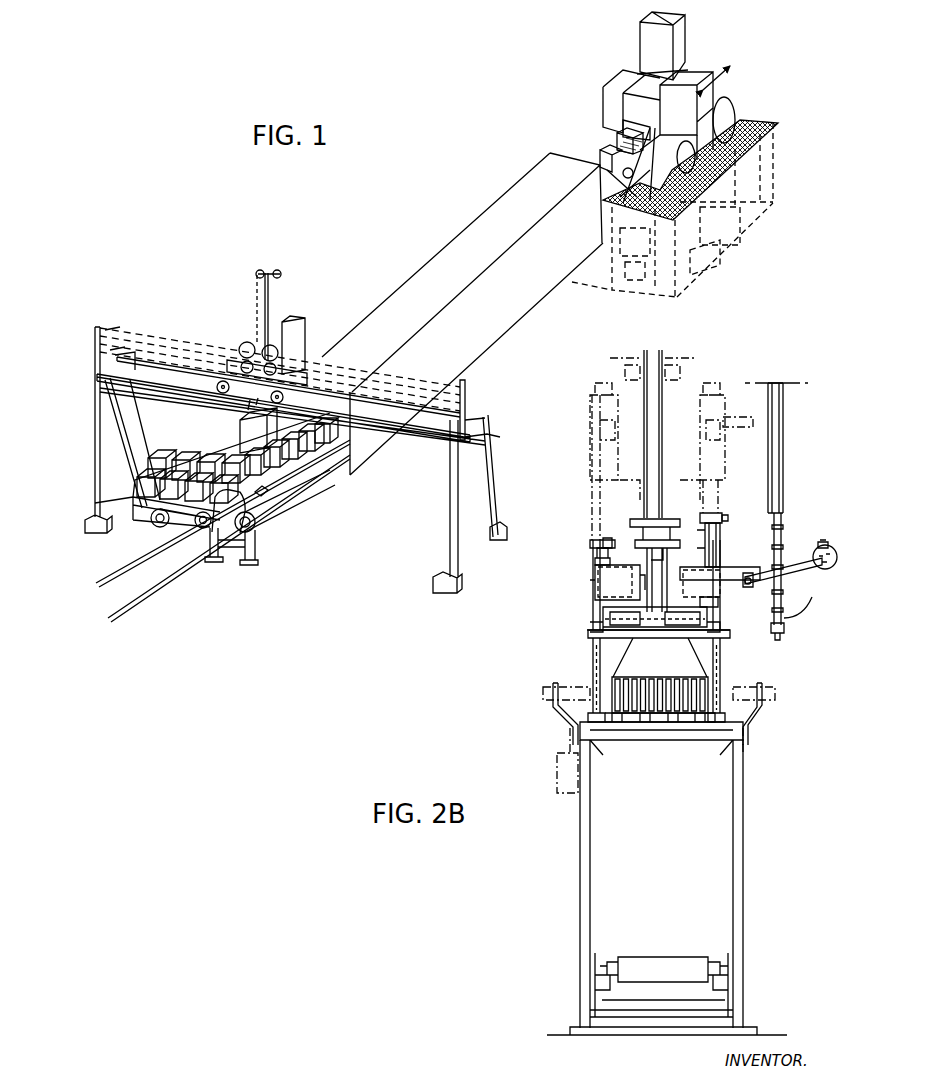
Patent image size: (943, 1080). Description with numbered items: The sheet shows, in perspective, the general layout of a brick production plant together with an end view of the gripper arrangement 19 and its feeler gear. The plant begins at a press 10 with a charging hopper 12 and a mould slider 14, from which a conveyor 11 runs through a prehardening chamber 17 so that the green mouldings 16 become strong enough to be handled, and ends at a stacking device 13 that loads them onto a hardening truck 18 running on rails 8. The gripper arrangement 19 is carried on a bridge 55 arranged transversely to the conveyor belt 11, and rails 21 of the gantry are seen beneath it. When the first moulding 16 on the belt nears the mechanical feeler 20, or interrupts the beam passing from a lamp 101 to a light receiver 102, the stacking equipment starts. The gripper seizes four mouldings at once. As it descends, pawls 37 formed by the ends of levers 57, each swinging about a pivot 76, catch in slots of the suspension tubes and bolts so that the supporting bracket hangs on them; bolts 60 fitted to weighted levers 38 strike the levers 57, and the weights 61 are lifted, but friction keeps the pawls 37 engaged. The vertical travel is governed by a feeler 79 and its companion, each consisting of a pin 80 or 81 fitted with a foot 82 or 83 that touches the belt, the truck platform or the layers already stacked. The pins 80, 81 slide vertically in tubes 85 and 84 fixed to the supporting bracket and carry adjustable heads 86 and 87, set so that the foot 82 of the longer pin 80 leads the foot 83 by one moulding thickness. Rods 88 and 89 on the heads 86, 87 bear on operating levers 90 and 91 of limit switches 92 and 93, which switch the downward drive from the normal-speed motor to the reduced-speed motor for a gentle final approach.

In FIG. 1, the floor rails 8 is at (110, 618).
In FIG. 1, the press 10 is at (730, 89).
In FIG. 1, the conveyor 11 is at (602, 208).
In FIG. 2B, the conveyor 11 is at (692, 733).
In FIG. 1, the charging hopper 12 is at (681, 43).
In FIG. 1, the stacking device 13 is at (327, 482).
In FIG. 1, the mould slider 14 is at (640, 118).
In FIG. 1, the mouldings 16 is at (596, 158).
In FIG. 1, the prehardening chamber 17 is at (496, 216).
In FIG. 1, the hardening truck 18 is at (142, 502).
In FIG. 1, the gripper arrangement 19 is at (247, 447).
In FIG. 2B, the gripper arrangement 19 is at (570, 640).
In FIG. 1, the mechanical feeler 20 is at (250, 497).
In FIG. 1, the gantry rails 21 is at (170, 392).
In FIG. 1, the bridge 55 is at (190, 350).
In FIG. 2B, the pawls 37 is at (683, 578).
In FIG. 2B, the levers 57 is at (732, 568).
In FIG. 2B, the bolts 60 is at (748, 587).
In FIG. 2B, the weights 61 is at (829, 545).
In FIG. 2B, the pivot 76 is at (655, 578).
In FIG. 2B, the feeler 79 is at (732, 504).
In FIG. 2B, the pin 80 is at (725, 525).
In FIG. 2B, the pin 81 is at (598, 540).
In FIG. 2B, the foot 82 is at (745, 712).
In FIG. 2B, the foot 83 is at (575, 716).
In FIG. 2B, the tube 84 is at (720, 617).
In FIG. 2B, the tube 85 is at (595, 607).
In FIG. 2B, the adjustable head 86 is at (705, 513).
In FIG. 2B, the adjustable head 87 is at (603, 538).
In FIG. 2B, the rod 88 is at (720, 546).
In FIG. 2B, the rod 89 is at (598, 555).
In FIG. 2B, the operating lever 90 is at (718, 603).
In FIG. 2B, the operating lever 91 is at (610, 593).
In FIG. 2B, the limit switch 92 is at (693, 572).
In FIG. 2B, the limit switch 93 is at (620, 576).
In FIG. 2B, the weighted levers 38 is at (812, 572).
In FIG. 2B, the lamp 101 is at (560, 688).
In FIG. 2B, the light receiver 102 is at (748, 684).